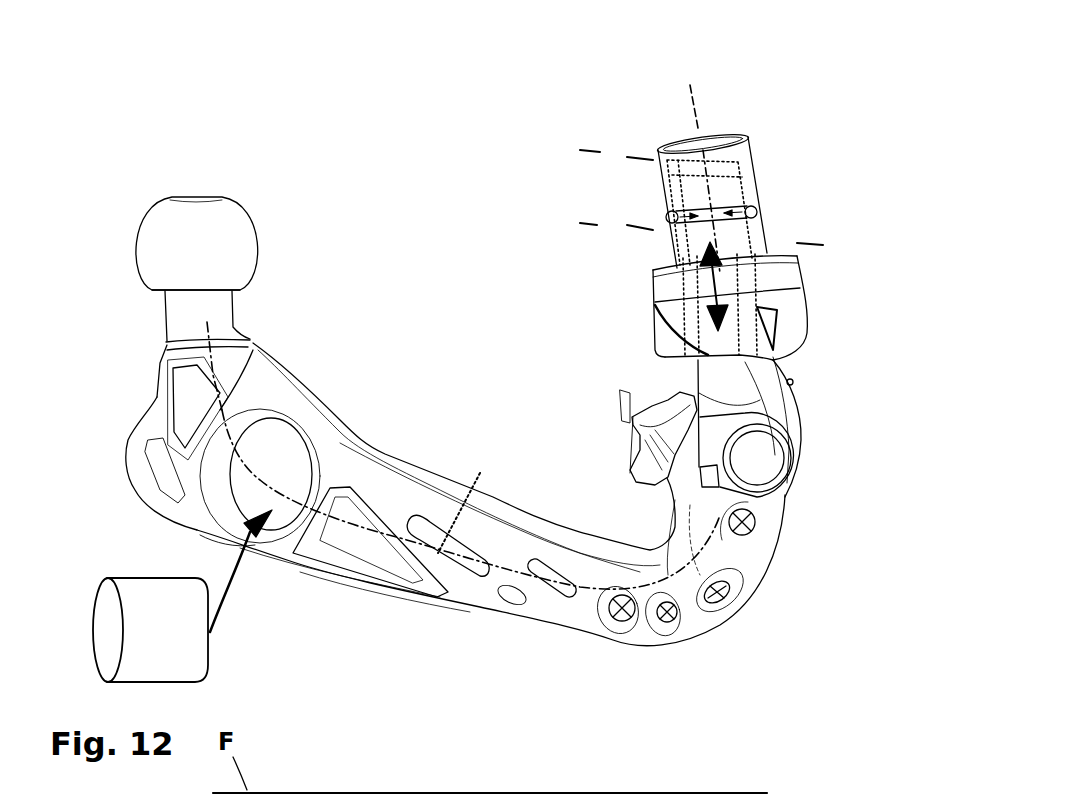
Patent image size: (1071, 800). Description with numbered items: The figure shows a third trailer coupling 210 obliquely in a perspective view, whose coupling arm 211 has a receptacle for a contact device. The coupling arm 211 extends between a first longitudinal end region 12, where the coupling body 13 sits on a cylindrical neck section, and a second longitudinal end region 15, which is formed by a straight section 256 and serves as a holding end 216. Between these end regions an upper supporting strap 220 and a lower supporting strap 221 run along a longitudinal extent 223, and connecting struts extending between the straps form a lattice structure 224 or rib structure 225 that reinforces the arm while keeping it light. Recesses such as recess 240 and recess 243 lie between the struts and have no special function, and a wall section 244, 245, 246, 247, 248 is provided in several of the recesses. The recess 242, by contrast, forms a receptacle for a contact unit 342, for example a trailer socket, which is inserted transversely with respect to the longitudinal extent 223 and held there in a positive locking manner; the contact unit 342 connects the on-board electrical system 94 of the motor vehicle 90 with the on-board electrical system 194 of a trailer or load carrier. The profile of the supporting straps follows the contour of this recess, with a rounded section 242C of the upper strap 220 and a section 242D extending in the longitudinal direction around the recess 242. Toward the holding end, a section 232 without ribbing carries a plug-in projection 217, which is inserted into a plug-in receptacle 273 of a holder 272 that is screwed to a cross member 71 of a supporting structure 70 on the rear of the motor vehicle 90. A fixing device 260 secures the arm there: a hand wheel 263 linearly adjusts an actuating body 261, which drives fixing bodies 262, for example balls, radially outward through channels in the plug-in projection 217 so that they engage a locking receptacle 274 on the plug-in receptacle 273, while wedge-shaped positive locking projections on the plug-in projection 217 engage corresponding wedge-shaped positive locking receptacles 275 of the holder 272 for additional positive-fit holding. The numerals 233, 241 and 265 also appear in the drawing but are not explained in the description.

The trailer coupling 210 is at (282, 173).
The coupling body 13 is at (237, 227).
The longitudinal end region 12 is at (242, 328).
The collar 233 is at (167, 350).
The recess 243 is at (187, 390).
The recess 242 is at (280, 445).
The section 242C is at (300, 427).
The section 242D is at (230, 530).
The coupling arm 211 is at (400, 482).
The longitudinal extent 223 is at (472, 503).
The supporting strap 220 is at (507, 537).
The supporting strap 221 is at (392, 577).
The triangular pocket 241 is at (343, 540).
The recess 240 is at (467, 570).
The wall section 248 is at (560, 593).
The lattice structure 224 is at (490, 587).
The rib structure 225 is at (587, 617).
The wall section 247 is at (620, 620).
The wall section 246 is at (662, 617).
The wall section 245 is at (717, 600).
The wall section 244 is at (753, 527).
The section 232 is at (783, 503).
The longitudinal end region 15 is at (802, 450).
The holding end 216 is at (800, 405).
The straight section 256 is at (770, 392).
The wedge 265 is at (778, 338).
The positive locking receptacle 275 is at (778, 315).
The actuating body 261 is at (700, 340).
The plug-in projection 217 is at (697, 357).
The fixing device 260 is at (674, 413).
The hand wheel 263 is at (630, 430).
The holder 272 is at (750, 138).
The plug-in receptacle 273 is at (663, 180).
The fixing body 262 is at (670, 217).
The locking receptacle 274 is at (757, 212).
The motor vehicle 90 is at (786, 175).
The supporting structure 70 is at (817, 173).
The cross member 71 is at (823, 183).
The contact unit 342 is at (100, 633).
The on-board electrical system 194 is at (94, 608).
The on-board electrical system 94 is at (210, 647).